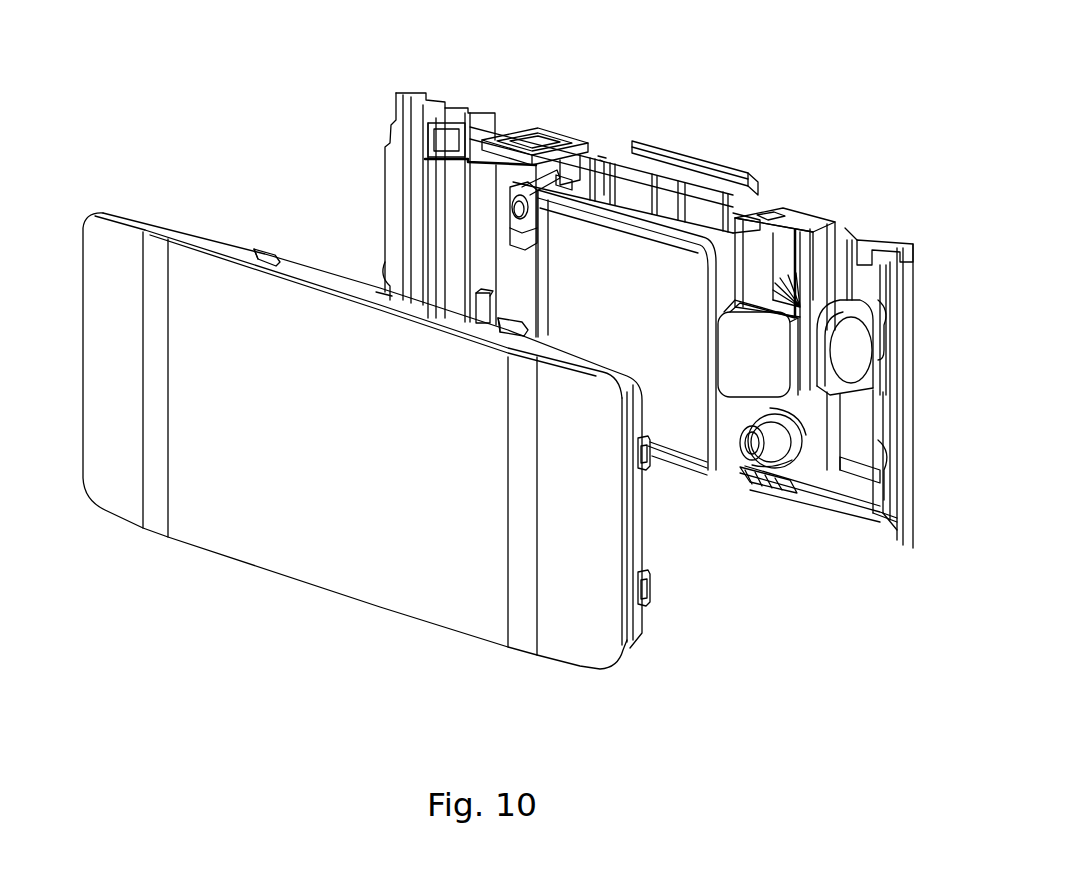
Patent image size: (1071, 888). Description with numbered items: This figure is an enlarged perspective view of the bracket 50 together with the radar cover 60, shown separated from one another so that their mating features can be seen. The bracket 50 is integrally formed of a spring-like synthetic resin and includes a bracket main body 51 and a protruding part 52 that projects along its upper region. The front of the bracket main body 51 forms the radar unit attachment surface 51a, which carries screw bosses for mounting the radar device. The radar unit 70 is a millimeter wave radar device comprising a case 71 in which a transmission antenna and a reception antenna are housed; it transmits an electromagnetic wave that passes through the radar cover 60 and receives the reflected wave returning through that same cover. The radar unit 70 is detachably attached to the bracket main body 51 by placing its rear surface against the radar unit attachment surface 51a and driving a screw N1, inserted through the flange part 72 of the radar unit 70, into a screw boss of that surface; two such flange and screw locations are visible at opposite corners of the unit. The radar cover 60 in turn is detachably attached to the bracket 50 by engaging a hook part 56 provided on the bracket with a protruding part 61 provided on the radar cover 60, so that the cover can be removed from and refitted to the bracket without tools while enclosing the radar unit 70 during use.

The bracket 50 is at (746, 80).
The bracket main body 51 is at (644, 320).
The radar unit attachment surface 51a is at (604, 152).
The protruding part 52 is at (681, 146).
The hook part 56 is at (548, 138).
The radar cover 60 is at (209, 190).
The protruding part 61 is at (268, 250).
The radar unit 70 is at (700, 470).
The case 71 is at (676, 444).
The flange part 72 is at (514, 200).
The screw N1 is at (498, 207).